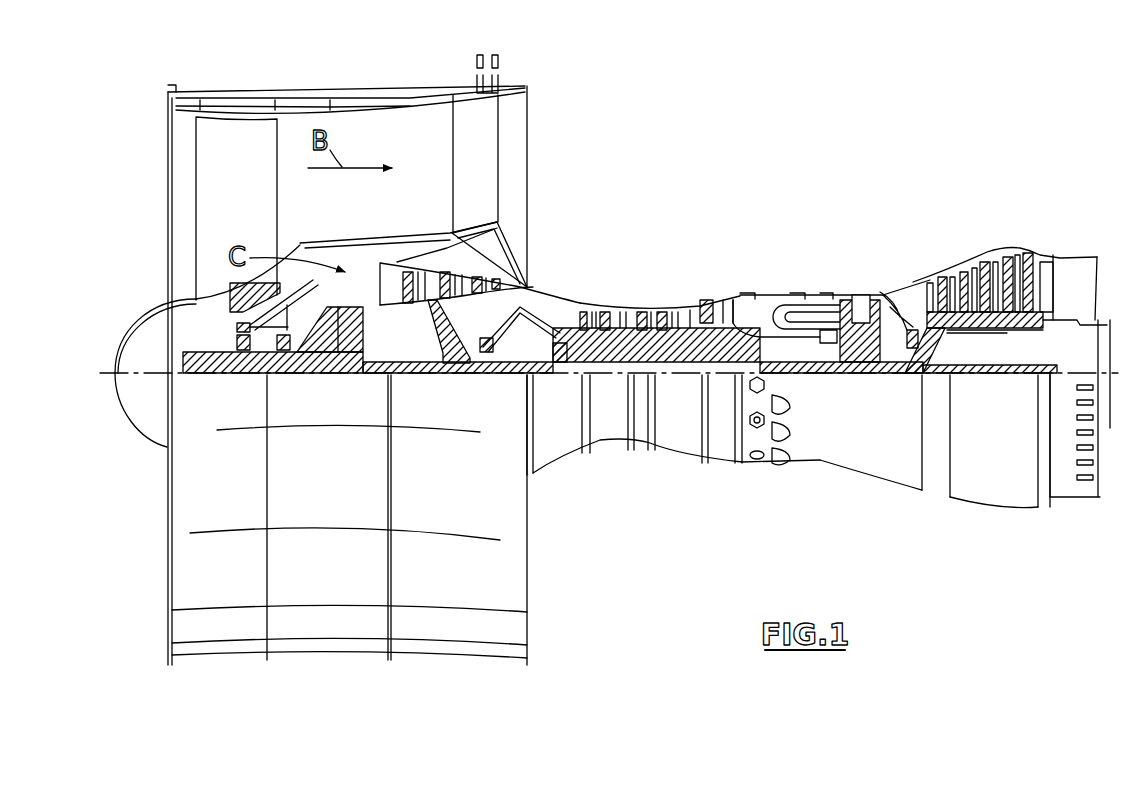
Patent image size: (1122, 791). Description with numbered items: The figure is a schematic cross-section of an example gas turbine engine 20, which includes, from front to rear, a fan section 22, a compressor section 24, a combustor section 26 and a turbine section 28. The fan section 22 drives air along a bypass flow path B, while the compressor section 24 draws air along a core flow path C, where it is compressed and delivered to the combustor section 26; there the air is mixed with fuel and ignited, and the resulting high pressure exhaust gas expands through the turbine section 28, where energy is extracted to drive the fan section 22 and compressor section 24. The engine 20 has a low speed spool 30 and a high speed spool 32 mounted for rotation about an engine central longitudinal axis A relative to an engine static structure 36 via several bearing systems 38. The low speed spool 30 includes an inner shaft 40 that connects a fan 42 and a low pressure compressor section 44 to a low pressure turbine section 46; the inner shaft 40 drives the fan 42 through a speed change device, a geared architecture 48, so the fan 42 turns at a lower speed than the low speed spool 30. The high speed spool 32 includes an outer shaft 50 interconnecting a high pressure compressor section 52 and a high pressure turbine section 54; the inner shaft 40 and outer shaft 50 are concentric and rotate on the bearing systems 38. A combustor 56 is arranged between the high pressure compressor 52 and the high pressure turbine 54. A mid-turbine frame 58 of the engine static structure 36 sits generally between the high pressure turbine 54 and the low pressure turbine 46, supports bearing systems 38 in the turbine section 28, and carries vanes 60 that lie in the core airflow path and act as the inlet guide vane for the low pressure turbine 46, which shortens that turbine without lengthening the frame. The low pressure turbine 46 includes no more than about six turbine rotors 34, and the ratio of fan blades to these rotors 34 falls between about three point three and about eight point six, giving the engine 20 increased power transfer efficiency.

The gas turbine engine 20 is at (802, 142).
The fan section 22 is at (375, 68).
The compressor section 24 is at (385, 210).
The combustor section 26 is at (793, 210).
The turbine section 28 is at (1055, 210).
The low speed spool 30 is at (682, 380).
The high speed spool 32 is at (720, 337).
The turbine rotors 34 is at (1007, 333).
The engine static structure 36 is at (723, 465).
The bearing systems 38 is at (253, 373).
The inner shaft 40 is at (540, 375).
The fan 42 is at (222, 218).
The low pressure compressor section 44 is at (463, 278).
The low pressure turbine section 46 is at (983, 267).
The geared architecture 48 is at (358, 362).
The outer shaft 50 is at (807, 353).
The high pressure compressor section 52 is at (657, 340).
The high pressure turbine section 54 is at (860, 292).
The combustor 56 is at (793, 317).
The mid-turbine frame 58 is at (905, 278).
The vanes 60 is at (927, 347).